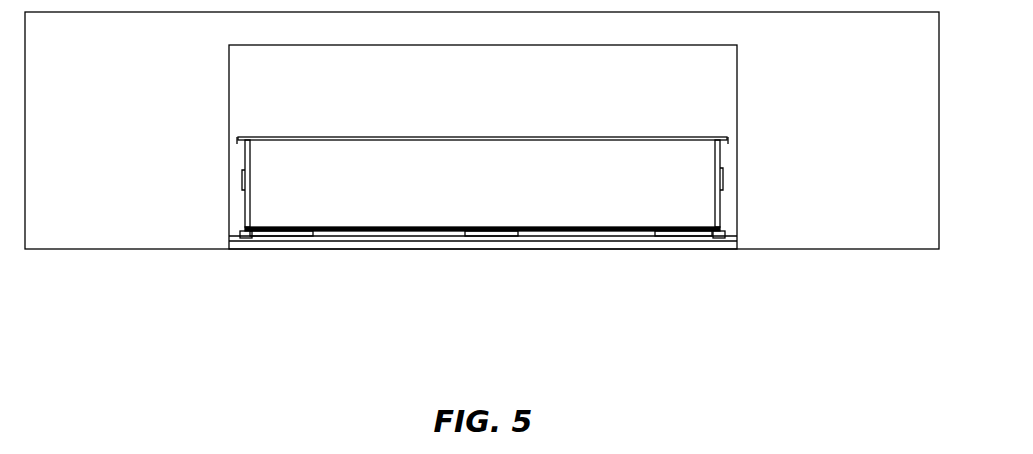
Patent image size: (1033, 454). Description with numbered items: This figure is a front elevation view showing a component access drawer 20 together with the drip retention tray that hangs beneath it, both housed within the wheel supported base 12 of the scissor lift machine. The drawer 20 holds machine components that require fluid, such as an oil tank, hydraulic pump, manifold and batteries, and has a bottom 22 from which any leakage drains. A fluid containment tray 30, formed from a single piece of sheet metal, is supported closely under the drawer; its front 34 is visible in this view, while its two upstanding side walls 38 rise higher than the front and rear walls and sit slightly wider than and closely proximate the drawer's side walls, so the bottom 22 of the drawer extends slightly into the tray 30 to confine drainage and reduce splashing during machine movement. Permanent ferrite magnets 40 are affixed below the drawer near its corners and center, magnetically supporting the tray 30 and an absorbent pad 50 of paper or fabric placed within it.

The wheel supported base 12 is at (856, 72).
The access drawer 20 is at (247, 158).
The bottom 22 is at (553, 232).
The fluid containment tray 30 is at (356, 250).
The front 34 is at (425, 246).
The side walls 38 is at (245, 233).
The permanent ferrite magnets 40 is at (287, 238).
The pad 50 is at (615, 240).